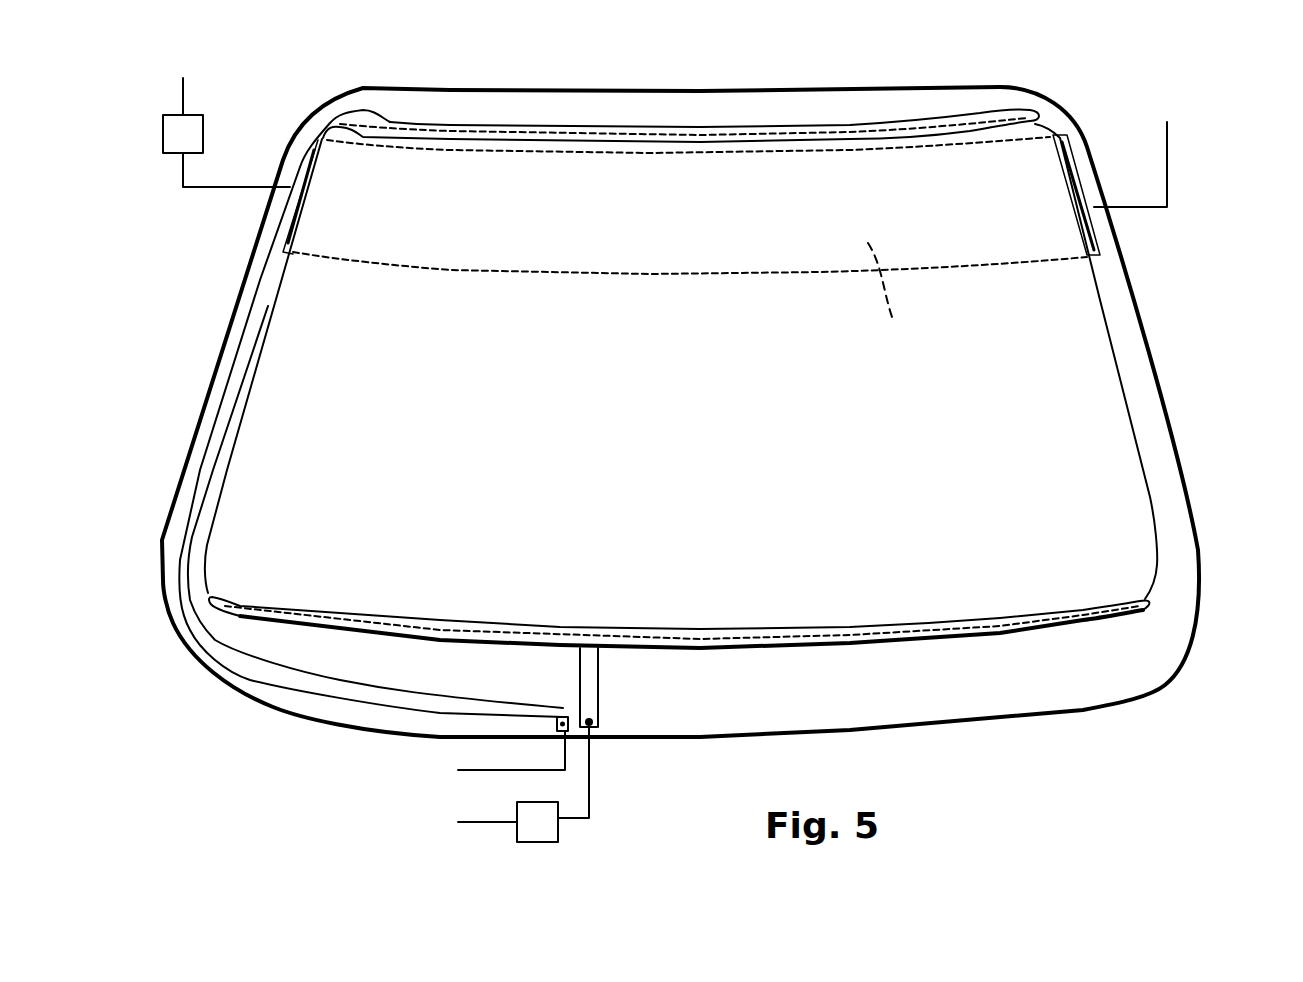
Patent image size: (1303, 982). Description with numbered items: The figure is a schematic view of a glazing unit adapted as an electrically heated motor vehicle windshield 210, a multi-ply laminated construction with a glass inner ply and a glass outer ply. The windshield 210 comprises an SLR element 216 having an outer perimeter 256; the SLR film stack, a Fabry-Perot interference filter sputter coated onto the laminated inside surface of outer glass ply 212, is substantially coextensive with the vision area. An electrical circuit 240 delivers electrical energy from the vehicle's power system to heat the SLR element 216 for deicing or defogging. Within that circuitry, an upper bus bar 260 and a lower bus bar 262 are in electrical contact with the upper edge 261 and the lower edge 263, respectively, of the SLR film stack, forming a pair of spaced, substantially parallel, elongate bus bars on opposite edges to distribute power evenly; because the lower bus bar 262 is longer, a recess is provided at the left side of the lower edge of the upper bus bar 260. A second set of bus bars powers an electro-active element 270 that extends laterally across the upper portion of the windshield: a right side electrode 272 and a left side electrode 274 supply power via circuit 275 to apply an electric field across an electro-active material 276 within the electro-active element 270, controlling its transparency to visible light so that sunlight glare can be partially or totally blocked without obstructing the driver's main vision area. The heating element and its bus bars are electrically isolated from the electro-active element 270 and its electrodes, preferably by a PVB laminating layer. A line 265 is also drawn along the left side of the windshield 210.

The motor vehicle windshield 210 is at (735, 80).
The outer glass ply 212 is at (1150, 465).
The SLR element 216 is at (1068, 327).
The electrical circuit 240 is at (612, 788).
The outer perimeter 256 is at (653, 138).
The upper bus bar 260 is at (853, 122).
The upper edge 261 is at (750, 137).
The lower bus bar 262 is at (563, 633).
The lower edge 263 is at (960, 637).
The side conductor lead 265 is at (268, 313).
The electro-active element 270 is at (905, 285).
The right side electrode 272 is at (1098, 237).
The left side electrode 274 is at (311, 162).
The circuit 275 is at (163, 130).
The electro-active material 276 is at (670, 235).